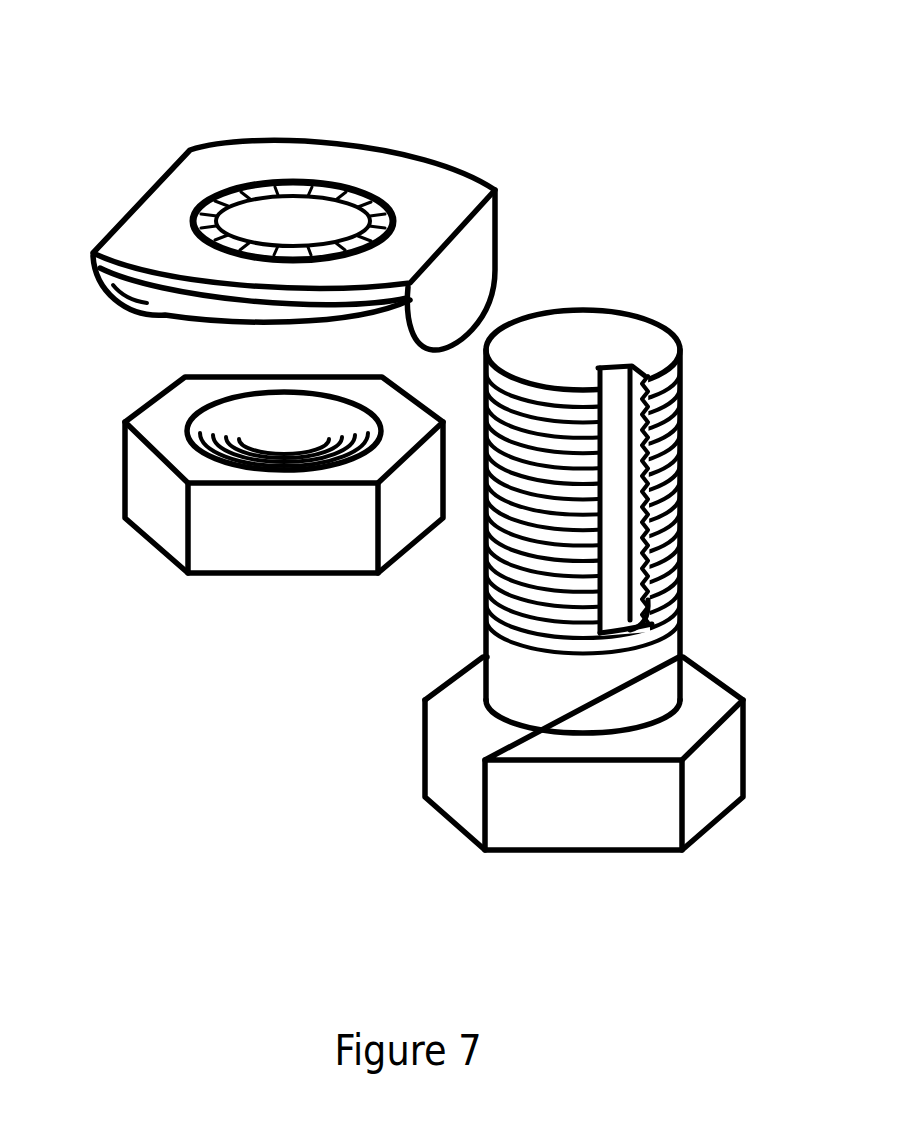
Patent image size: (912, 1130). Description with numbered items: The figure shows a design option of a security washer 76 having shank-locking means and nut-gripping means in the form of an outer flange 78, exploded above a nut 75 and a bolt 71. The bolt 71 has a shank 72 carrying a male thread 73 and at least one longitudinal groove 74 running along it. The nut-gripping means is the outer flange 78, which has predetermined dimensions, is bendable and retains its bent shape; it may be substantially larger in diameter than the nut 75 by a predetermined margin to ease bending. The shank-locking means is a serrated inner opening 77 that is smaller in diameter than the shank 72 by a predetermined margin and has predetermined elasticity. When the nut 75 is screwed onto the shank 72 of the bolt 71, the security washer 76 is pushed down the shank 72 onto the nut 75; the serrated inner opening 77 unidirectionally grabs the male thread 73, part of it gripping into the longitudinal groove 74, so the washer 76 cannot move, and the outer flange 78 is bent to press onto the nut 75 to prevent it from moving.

The bolt 71 is at (445, 763).
The shank 72 is at (658, 662).
The male thread 73 is at (682, 528).
The longitudinal groove 74 is at (622, 490).
The nut 75 is at (252, 507).
The security washer 76 is at (207, 170).
The serrated inner opening 77 is at (313, 220).
The outer flange 78 is at (463, 262).